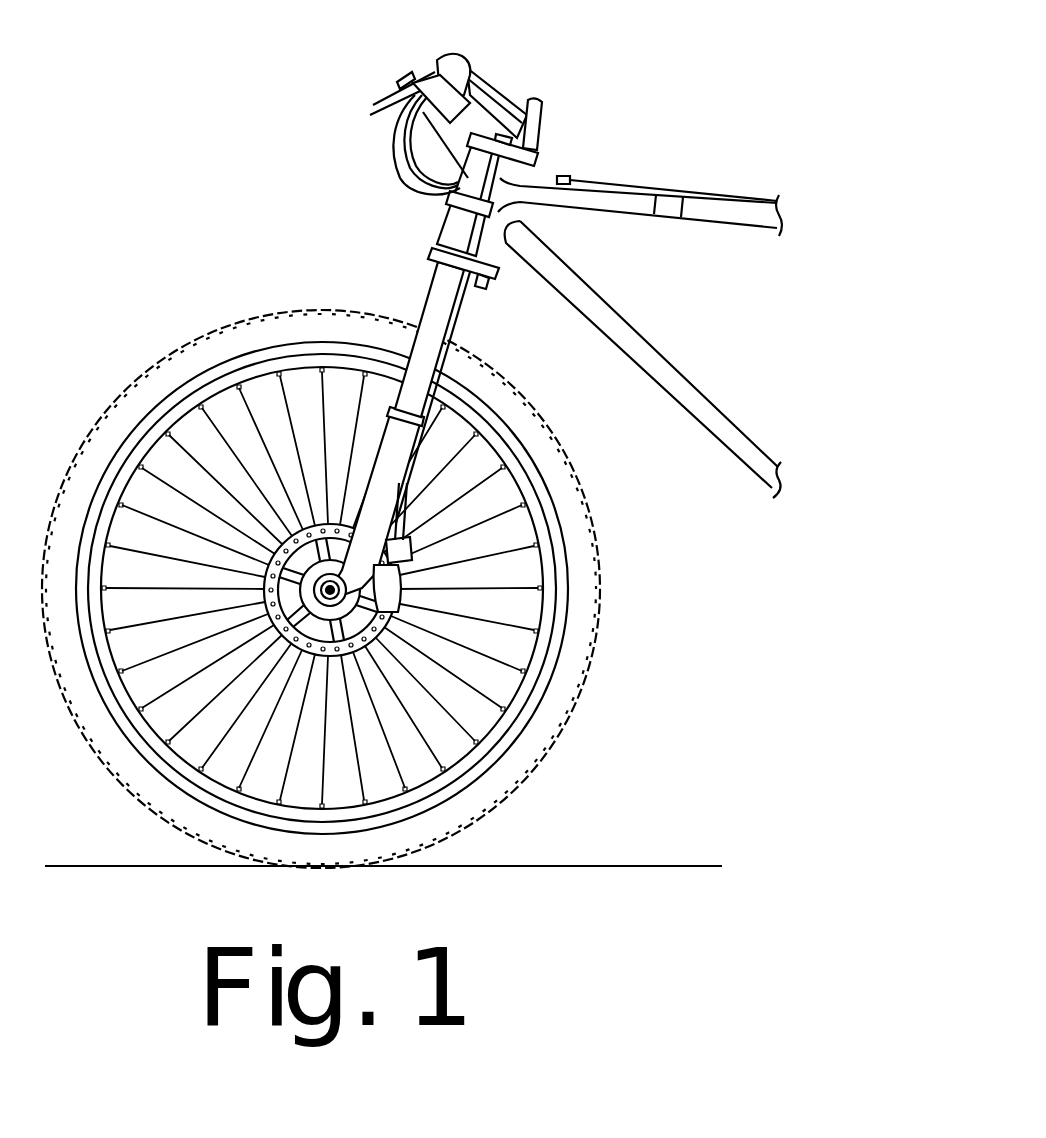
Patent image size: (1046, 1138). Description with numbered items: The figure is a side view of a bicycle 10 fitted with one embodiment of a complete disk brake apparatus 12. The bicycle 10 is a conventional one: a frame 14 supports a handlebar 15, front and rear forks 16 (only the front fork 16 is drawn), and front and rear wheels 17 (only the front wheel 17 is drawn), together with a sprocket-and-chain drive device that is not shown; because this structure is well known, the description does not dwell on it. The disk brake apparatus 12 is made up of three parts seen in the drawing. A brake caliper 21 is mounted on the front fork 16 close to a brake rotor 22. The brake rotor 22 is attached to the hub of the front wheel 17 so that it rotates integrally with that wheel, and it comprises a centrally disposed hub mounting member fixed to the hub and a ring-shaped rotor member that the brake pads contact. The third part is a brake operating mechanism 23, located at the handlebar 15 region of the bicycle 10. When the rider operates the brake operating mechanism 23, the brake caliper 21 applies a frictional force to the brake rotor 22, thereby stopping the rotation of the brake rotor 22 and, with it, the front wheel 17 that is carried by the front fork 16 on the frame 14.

The bicycle 10 is at (266, 150).
The disk brake apparatus 12 is at (396, 625).
The frame 14 is at (607, 305).
The handlebar 15 is at (503, 95).
The front fork 16 is at (462, 300).
The front wheel 17 is at (593, 521).
The brake caliper 21 is at (403, 571).
The brake rotor 22 is at (350, 657).
The brake operating mechanism 23 is at (420, 68).